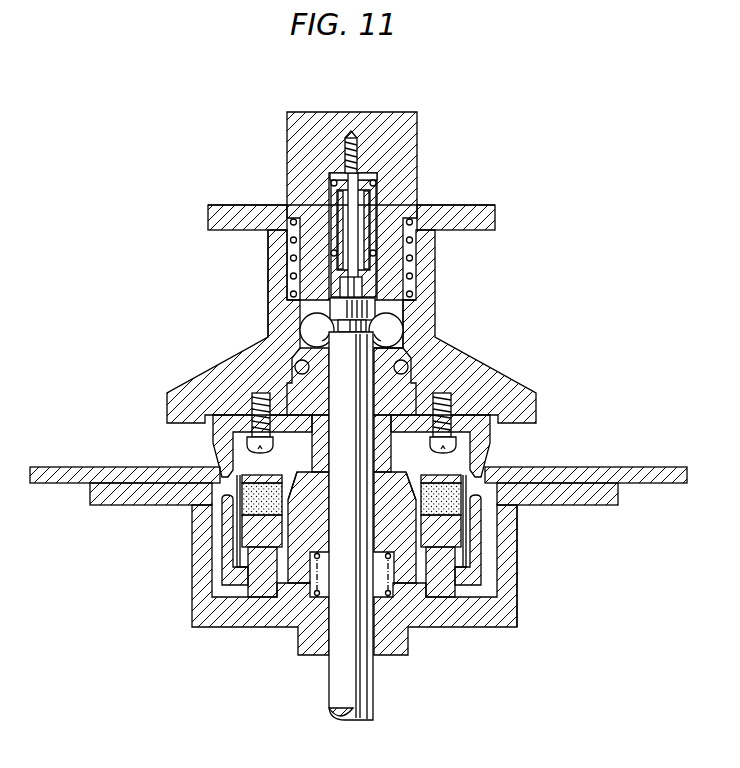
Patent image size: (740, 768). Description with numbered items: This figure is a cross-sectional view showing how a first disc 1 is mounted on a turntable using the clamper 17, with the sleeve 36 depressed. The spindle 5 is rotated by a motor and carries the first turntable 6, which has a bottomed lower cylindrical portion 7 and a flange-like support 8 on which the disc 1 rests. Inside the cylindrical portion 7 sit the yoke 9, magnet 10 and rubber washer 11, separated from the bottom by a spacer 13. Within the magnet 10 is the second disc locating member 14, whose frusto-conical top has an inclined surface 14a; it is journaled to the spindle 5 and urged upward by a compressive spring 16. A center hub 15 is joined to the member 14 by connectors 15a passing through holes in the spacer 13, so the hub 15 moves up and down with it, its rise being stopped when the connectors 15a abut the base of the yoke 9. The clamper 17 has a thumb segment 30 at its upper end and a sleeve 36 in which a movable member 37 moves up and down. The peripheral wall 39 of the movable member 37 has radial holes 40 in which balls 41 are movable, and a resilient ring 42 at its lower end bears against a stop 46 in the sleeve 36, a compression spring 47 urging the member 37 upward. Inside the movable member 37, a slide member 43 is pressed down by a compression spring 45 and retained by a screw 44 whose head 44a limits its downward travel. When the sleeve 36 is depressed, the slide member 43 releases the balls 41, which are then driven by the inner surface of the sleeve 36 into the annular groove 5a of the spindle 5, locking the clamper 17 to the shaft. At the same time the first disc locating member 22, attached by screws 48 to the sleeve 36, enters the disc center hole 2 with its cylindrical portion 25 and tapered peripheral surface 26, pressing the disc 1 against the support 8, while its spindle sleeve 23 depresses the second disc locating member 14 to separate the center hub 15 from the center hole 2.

The first disc 1 is at (658, 466).
The center hole 2 is at (517, 525).
The spindle 5 is at (330, 686).
The annular groove 5a is at (290, 341).
The first turntable 6 is at (588, 504).
The cylindrical portion 7 is at (517, 580).
The support 8 is at (560, 504).
The yoke 9 is at (247, 545).
The magnet 10 is at (260, 499).
The rubber washer 11 is at (255, 472).
The spacer 13 is at (263, 583).
The second disc locating member 14 is at (400, 523).
The inclined surface 14a is at (408, 472).
The center hub 15 is at (229, 543).
The connectors 15a is at (475, 577).
The compressive spring 16 is at (307, 597).
The clamper 17 is at (481, 195).
The first disc locating member 22 is at (210, 440).
The spindle sleeve 23 is at (388, 428).
The cylindrical portion 25 is at (502, 416).
The peripheral surface 26 is at (494, 447).
The thumb segment 30 is at (496, 221).
The sleeve 36 is at (268, 255).
The movable member 37 is at (417, 117).
The peripheral wall 39 is at (320, 304).
The holes 40 is at (380, 307).
The balls 41 is at (305, 330).
The resilient ring 42 is at (410, 363).
The slide member 43 is at (375, 268).
The screw 44 is at (362, 200).
The head 44a is at (344, 283).
The compression spring 45 is at (373, 180).
The stop 46 is at (402, 336).
The compression spring 47 is at (413, 238).
The screws 48 is at (450, 405).